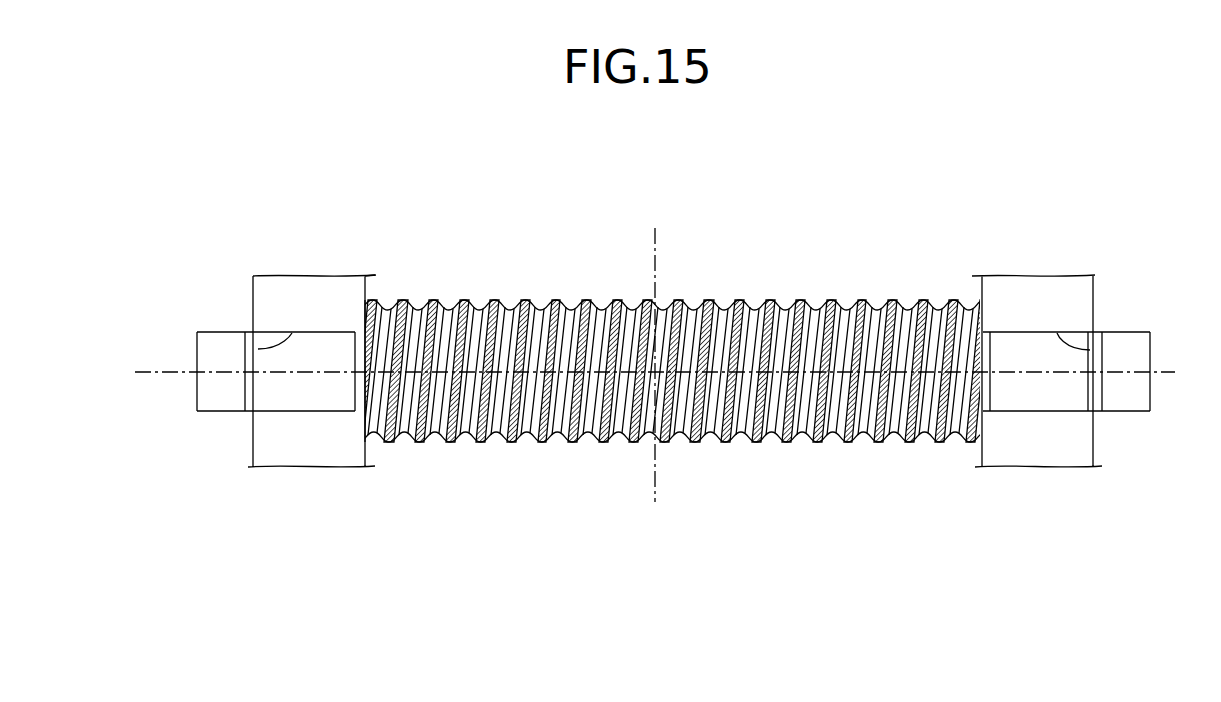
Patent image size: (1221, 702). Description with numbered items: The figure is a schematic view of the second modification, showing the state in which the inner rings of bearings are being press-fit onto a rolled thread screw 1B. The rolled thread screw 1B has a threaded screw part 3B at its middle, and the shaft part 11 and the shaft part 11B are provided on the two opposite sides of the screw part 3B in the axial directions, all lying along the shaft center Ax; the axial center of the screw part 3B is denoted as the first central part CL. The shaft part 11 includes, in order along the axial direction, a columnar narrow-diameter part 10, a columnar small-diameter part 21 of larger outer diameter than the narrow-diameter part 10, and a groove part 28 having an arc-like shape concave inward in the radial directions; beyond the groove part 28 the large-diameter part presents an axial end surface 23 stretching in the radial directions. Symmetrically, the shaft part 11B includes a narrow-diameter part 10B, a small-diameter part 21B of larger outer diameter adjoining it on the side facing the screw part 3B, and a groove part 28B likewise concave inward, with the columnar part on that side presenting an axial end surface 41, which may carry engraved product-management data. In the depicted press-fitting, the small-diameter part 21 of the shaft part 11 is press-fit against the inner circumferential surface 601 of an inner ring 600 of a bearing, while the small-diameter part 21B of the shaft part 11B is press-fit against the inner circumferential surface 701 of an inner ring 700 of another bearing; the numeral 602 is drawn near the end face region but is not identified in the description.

The rolled thread screw 1B is at (669, 398).
The screw part 3B is at (682, 434).
The narrow-diameter part 10 is at (217, 413).
The narrow-diameter part 10B is at (1128, 413).
The shaft part 11 is at (295, 403).
The shaft part 11B is at (1093, 398).
The small-diameter part 21 is at (295, 401).
The small-diameter part 21B is at (1050, 400).
The axial end surface 23 is at (363, 317).
The groove part 28 is at (360, 391).
The groove part 28B is at (985, 390).
The axial end surface 41 is at (986, 348).
The inner ring 600 is at (243, 292).
The inner circumferential surface 601 is at (258, 349).
The contact portion 602 is at (367, 293).
The inner ring 700 is at (1103, 292).
The inner circumferential surface 701 is at (1100, 349).
The shaft center Ax is at (148, 378).
The first central part CL is at (660, 243).